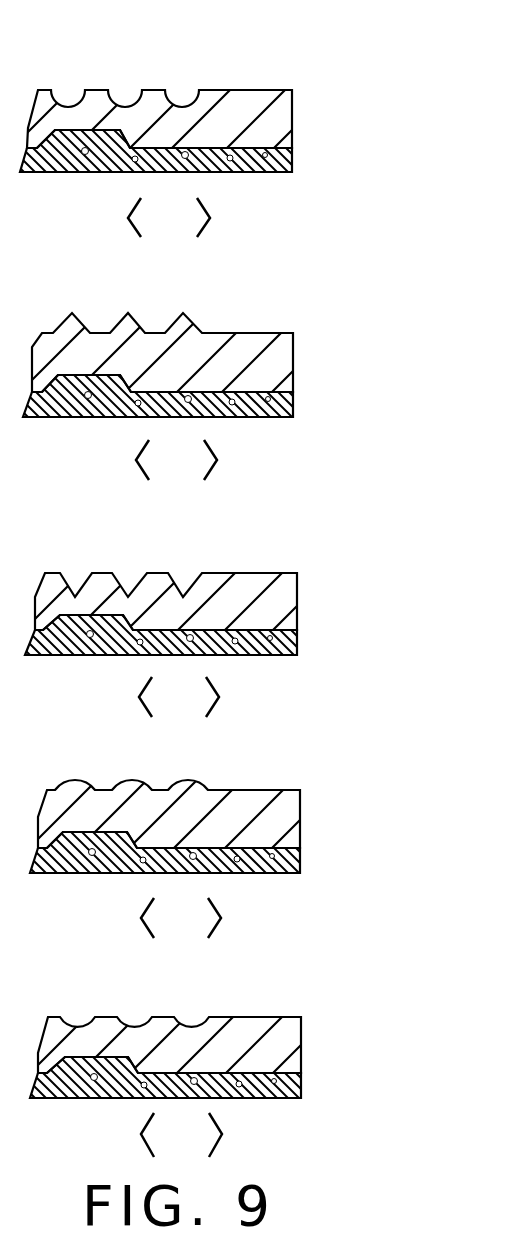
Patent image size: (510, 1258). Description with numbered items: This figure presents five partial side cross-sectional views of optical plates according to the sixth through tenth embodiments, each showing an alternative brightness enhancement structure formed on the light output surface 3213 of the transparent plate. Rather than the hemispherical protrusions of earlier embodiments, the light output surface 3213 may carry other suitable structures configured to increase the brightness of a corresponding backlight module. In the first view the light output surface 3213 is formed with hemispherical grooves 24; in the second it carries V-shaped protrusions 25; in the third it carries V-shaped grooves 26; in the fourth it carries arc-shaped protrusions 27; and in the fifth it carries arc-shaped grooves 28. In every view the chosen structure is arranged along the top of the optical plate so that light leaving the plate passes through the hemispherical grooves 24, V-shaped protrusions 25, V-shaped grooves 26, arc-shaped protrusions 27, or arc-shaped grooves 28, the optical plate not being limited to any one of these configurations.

The hemispherical grooves 24 is at (180, 98).
The V-shaped protrusions 25 is at (187, 328).
The V-shaped grooves 26 is at (182, 580).
The arc-shaped protrusions 27 is at (190, 785).
The arc-shaped grooves 28 is at (190, 1022).
The light output surface 3213 is at (216, 588).